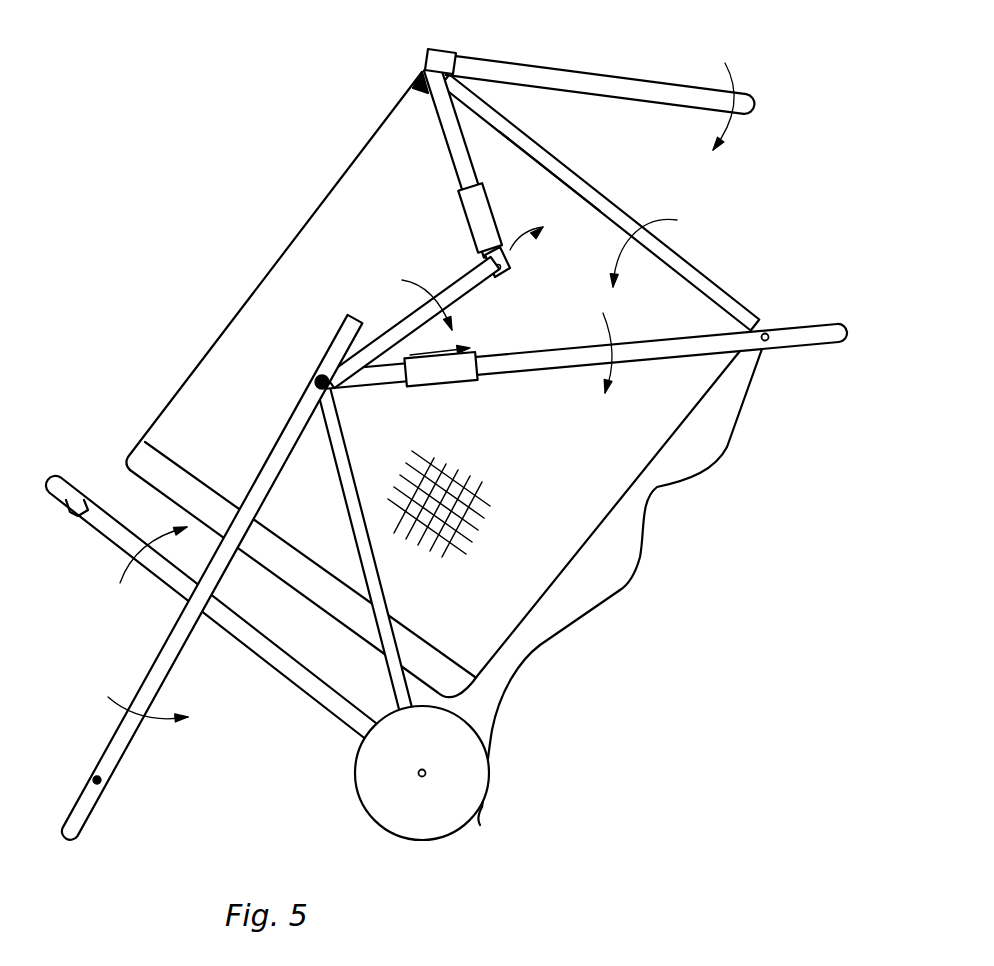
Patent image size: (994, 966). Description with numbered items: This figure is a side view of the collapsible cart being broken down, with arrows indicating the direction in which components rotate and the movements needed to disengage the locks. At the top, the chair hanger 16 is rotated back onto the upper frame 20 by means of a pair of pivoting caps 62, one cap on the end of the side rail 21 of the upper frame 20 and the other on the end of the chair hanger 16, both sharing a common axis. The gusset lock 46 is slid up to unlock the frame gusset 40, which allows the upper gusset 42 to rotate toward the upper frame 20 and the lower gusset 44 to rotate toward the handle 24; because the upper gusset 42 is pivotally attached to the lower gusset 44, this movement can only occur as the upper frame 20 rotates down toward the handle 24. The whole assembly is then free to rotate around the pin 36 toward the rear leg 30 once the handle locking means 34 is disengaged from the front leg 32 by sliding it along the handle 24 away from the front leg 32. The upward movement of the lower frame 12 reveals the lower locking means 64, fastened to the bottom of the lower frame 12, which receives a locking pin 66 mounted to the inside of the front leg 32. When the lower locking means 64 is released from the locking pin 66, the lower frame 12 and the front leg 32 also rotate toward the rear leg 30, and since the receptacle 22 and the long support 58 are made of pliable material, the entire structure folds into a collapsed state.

The lower frame 12 is at (267, 662).
The chair hanger 16 is at (585, 95).
The upper frame 20 is at (633, 205).
The side rail 21 is at (560, 168).
The receptacle 22 is at (633, 487).
The handle 24 is at (800, 323).
The rear leg 30 is at (385, 597).
The front leg 32 is at (250, 480).
The handle locking means 34 is at (448, 385).
The pin 36 is at (318, 381).
The frame gusset 40 is at (415, 193).
The upper gusset 42 is at (447, 142).
The lower gusset 44 is at (403, 318).
The gusset lock 46 is at (480, 252).
The long support 58 is at (623, 588).
The pivoting caps 62 is at (443, 47).
The lower locking means 64 is at (70, 513).
The locking pin 66 is at (103, 787).